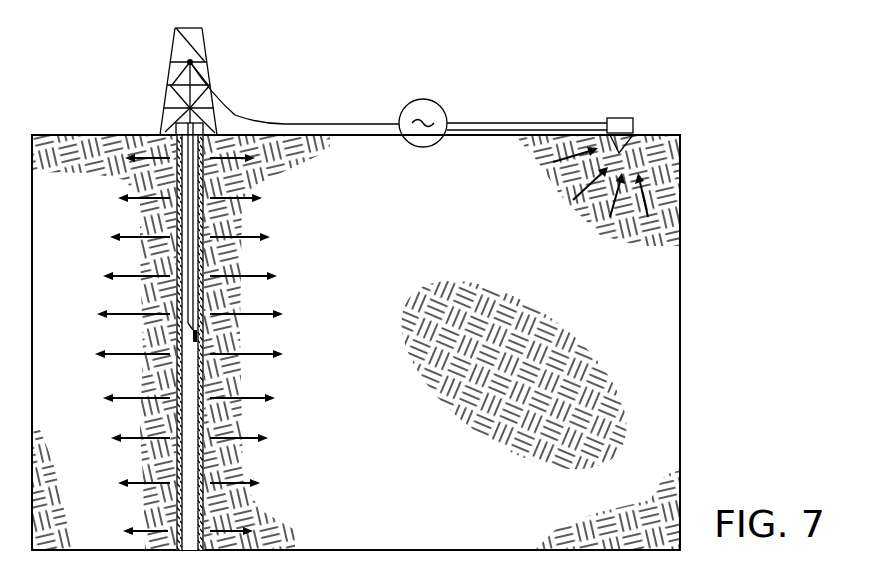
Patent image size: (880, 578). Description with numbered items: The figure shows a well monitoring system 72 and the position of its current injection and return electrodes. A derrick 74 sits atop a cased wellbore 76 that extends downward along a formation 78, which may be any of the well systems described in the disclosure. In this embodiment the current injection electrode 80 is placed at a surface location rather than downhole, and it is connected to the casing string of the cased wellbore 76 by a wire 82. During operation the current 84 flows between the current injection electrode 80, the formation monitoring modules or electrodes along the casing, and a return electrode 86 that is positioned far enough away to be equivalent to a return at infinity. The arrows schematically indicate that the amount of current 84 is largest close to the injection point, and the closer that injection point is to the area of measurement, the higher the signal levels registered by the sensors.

The well monitoring system 72 is at (112, 52).
The derrick 74 is at (205, 52).
The cased wellbore 76 is at (172, 323).
The formation 78 is at (517, 395).
The current injection electrode 80 is at (440, 106).
The wire 82 is at (192, 222).
The current 84 is at (290, 226).
The return electrode 86 is at (620, 118).